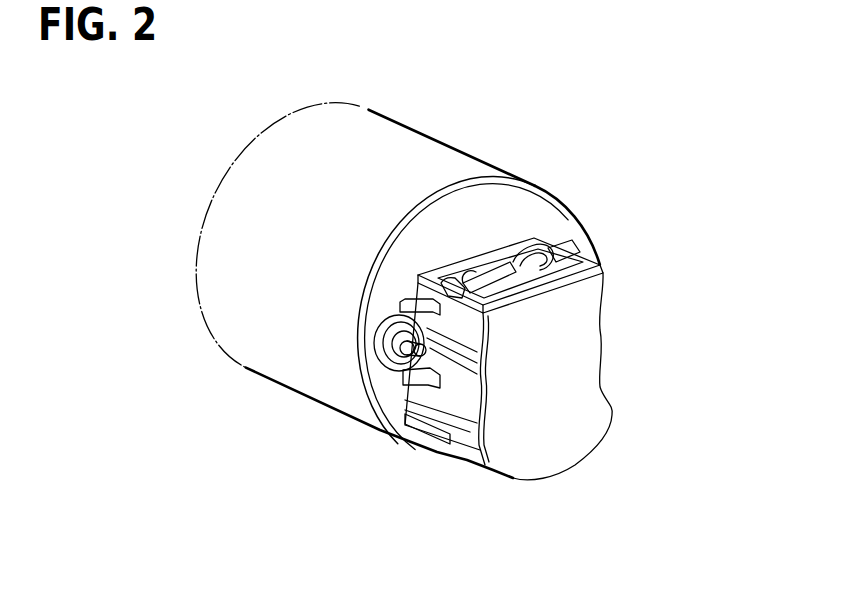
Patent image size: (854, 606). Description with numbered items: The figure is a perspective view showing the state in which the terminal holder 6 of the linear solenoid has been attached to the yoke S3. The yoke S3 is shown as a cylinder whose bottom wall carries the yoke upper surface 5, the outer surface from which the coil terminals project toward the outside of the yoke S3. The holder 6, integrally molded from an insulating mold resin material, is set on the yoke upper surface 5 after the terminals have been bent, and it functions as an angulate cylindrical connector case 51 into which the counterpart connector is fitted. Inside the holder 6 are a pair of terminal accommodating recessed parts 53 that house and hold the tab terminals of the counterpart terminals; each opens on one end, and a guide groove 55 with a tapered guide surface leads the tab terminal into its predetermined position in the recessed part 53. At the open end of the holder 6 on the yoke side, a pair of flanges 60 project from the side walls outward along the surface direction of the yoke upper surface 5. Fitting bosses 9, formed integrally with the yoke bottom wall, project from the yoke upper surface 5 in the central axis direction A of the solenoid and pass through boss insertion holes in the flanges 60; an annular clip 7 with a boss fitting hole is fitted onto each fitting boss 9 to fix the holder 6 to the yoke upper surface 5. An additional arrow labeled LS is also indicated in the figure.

The yoke S3 is at (380, 132).
The flange 60 is at (386, 337).
The clip 7 is at (393, 350).
The fitting boss 9 is at (405, 358).
The holder 6 is at (560, 269).
The connector case 51 is at (583, 380).
The yoke upper surface 5 is at (554, 178).
The guide groove 55 is at (462, 287).
The terminal accommodating recessed part 53 is at (508, 288).
The central axis direction A is at (542, 378).
The direction LS is at (439, 494).